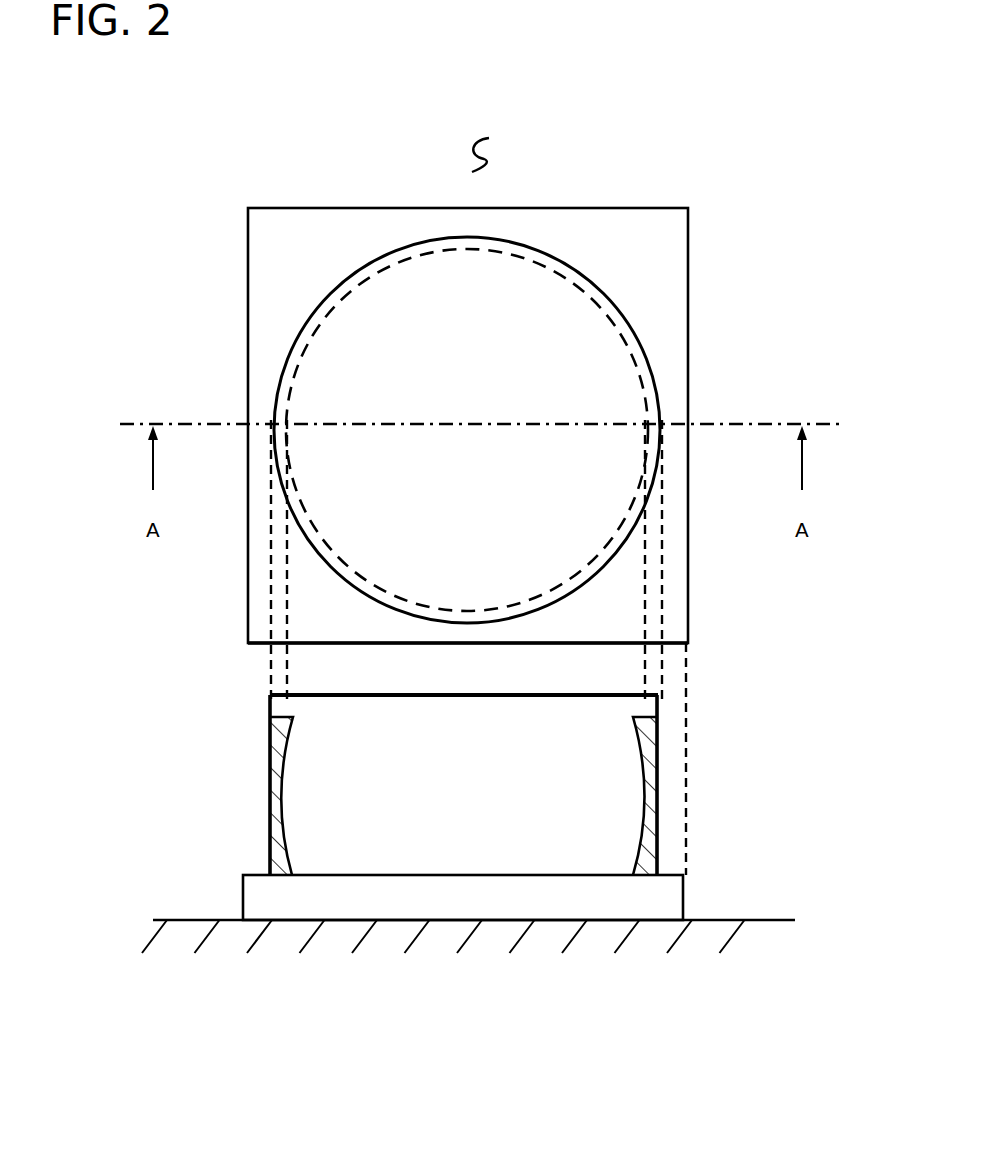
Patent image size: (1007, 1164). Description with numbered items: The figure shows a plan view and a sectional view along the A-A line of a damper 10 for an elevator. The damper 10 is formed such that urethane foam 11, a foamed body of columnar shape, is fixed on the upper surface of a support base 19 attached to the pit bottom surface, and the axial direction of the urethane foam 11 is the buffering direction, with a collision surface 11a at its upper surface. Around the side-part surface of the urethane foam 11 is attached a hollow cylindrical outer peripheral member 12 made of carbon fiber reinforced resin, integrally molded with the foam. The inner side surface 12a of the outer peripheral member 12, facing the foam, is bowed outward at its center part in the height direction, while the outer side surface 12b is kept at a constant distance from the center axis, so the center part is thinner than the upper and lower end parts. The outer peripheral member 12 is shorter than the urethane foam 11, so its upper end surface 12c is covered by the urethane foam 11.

The damper for elevator 10 is at (484, 125).
The urethane foam 11 is at (557, 307).
The collision surface 11a is at (377, 690).
The outer peripheral member 12 is at (660, 735).
The inner side surface 12a is at (625, 790).
The outer side surface 12b is at (658, 850).
The upper end surface 12c is at (659, 699).
The support base 19 is at (273, 235).